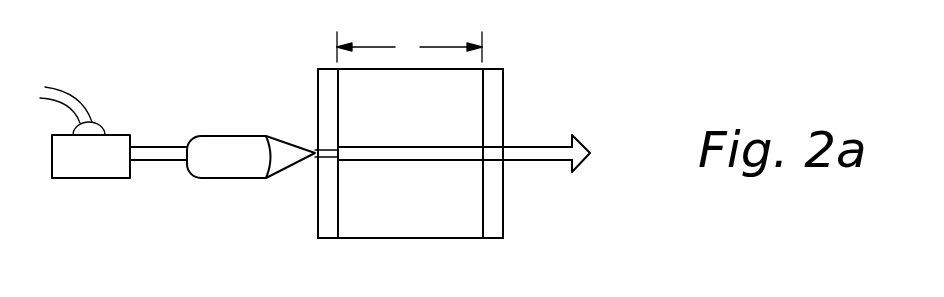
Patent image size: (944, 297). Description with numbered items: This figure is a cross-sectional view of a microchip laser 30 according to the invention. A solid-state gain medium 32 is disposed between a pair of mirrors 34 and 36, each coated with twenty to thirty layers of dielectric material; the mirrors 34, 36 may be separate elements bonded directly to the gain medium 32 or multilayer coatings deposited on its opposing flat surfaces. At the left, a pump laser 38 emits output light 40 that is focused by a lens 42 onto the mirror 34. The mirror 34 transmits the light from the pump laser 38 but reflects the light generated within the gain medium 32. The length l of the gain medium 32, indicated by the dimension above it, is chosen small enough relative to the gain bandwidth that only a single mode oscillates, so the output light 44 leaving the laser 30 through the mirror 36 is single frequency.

The microchip laser 30 is at (568, 77).
The solid-state gain medium 32 is at (462, 113).
The mirror 34 is at (318, 211).
The mirror 36 is at (503, 209).
The laser 38 is at (65, 178).
The output light 40 is at (153, 146).
The lens 42 is at (237, 136).
The output light 44 is at (580, 138).